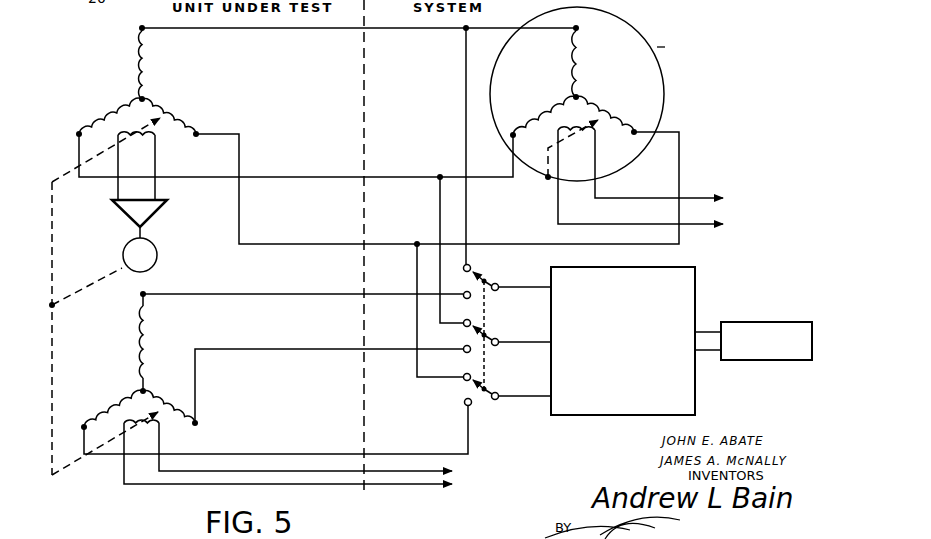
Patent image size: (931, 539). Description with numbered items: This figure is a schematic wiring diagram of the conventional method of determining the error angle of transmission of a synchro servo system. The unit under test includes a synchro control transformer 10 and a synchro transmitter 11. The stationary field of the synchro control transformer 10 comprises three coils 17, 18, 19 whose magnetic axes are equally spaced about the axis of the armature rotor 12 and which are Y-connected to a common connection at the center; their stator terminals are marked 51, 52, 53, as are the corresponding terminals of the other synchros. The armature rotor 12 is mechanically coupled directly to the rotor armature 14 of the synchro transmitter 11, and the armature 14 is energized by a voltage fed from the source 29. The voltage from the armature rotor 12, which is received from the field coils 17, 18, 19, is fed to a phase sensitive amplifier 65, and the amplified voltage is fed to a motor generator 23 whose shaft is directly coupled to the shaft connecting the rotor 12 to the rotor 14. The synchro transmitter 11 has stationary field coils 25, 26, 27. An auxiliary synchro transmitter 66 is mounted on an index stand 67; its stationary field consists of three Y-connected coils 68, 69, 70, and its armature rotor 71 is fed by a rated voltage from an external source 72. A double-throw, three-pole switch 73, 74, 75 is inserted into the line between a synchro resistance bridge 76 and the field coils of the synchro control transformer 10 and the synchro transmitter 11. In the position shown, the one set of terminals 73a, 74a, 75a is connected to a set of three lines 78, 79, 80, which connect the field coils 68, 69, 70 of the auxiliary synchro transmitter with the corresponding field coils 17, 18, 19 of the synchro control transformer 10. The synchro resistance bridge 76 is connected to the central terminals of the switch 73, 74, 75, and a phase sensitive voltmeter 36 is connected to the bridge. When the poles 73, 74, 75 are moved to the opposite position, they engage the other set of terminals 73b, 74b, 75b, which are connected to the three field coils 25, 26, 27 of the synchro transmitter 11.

The synchro control transformer 10 is at (148, 98).
The synchro transmitter 11 is at (139, 389).
The armature rotor 12 is at (156, 138).
The rotor armature 14 is at (161, 435).
The stationary field coil 17 is at (145, 55).
The stationary field coil 18 is at (117, 104).
The stationary field coil 19 is at (183, 112).
The motor generator 23 is at (123, 251).
The stationary field coil 25 is at (137, 346).
The stationary field coil 26 is at (114, 400).
The stationary field coil 27 is at (179, 389).
The source 29 is at (455, 478).
The phase sensitive voltmeter 36 is at (763, 321).
The stator terminal S1 51 is at (139, 29).
The stator terminal S2 52 is at (79, 131).
The stator terminal S3 53 is at (198, 133).
The phase sensitive amplifier 65 is at (121, 222).
The auxiliary synchro transmitter 66 is at (581, 95).
The index stand 67 is at (622, 22).
The field coil 68 is at (580, 62).
The field coil 69 is at (543, 106).
The field coil 70 is at (609, 100).
The armature rotor 71 is at (595, 138).
The external source 72 is at (722, 212).
The switch pole 73 is at (499, 287).
The switch terminal 73a is at (484, 262).
The switch terminal 73b is at (463, 293).
The switch pole 74 is at (499, 342).
The switch terminal 74a is at (463, 322).
The switch terminal 74b is at (463, 348).
The switch pole 75 is at (499, 396).
The switch terminal 75a is at (463, 376).
The switch terminal 75b is at (464, 404).
The synchro resistance bridge 76 is at (696, 267).
The line 78 is at (420, 30).
The line 79 is at (405, 243).
The line 80 is at (436, 174).